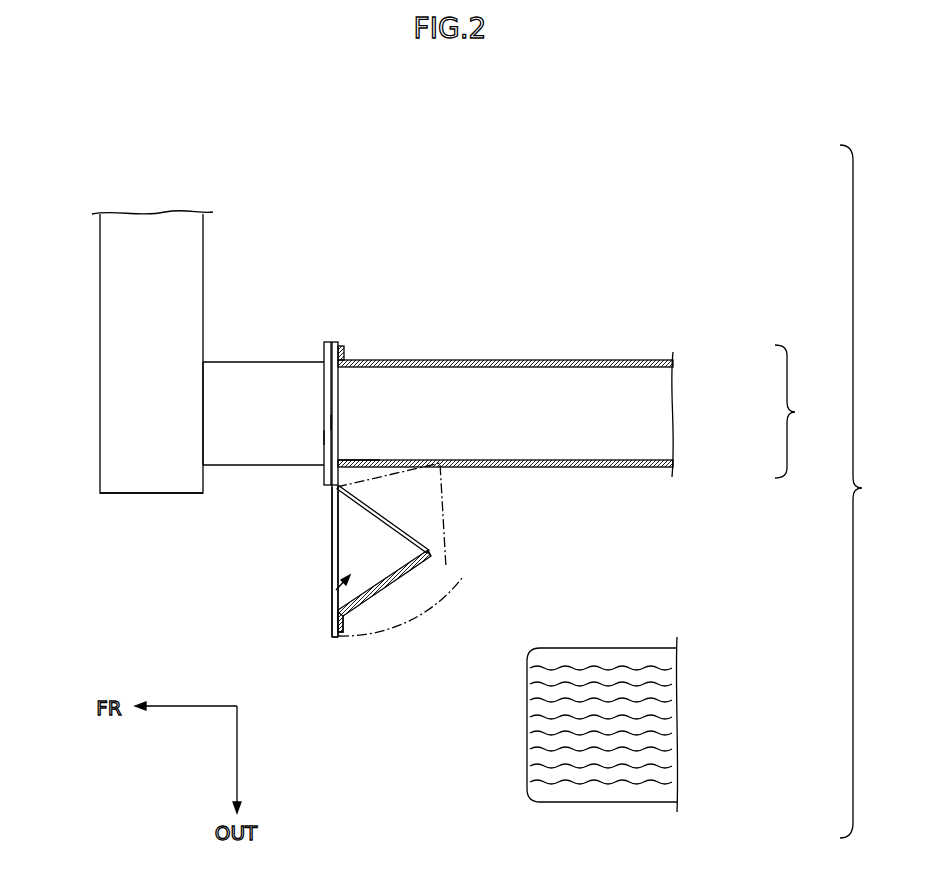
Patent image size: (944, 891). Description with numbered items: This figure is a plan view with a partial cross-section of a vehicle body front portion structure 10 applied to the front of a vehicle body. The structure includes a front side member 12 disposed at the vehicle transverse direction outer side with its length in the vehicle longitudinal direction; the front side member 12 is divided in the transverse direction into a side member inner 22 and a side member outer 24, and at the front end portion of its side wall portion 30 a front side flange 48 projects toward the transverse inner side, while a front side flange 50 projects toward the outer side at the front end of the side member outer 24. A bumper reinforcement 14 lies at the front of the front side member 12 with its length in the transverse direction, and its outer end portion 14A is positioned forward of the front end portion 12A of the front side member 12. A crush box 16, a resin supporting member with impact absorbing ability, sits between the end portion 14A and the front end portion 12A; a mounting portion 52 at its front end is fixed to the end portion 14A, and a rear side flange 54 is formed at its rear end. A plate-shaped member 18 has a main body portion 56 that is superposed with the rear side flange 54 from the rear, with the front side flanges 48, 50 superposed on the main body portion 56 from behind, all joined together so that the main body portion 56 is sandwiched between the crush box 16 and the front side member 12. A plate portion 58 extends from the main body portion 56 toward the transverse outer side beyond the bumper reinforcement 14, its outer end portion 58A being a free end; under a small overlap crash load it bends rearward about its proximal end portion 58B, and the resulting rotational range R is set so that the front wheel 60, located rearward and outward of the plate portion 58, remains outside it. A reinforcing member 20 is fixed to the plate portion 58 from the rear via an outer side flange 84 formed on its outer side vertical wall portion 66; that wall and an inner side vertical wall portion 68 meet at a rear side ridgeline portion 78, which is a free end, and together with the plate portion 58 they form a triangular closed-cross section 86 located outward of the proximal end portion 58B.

The vehicle body front portion structure 10 is at (436, 184).
The front side member 12 is at (579, 391).
The front end portion of the front side member 12A is at (325, 385).
The bumper reinforcement 14 is at (98, 301).
The end portion of the bumper reinforcement 14A is at (150, 494).
The crush box 16 is at (262, 360).
The plate-shaped member 18 is at (342, 436).
The reinforcing member 20 is at (391, 589).
The side member inner 22 is at (648, 362).
The side member outer 24 is at (648, 466).
The side wall portion 30 is at (546, 391).
The front side flange 48 is at (341, 352).
The front side flange 50 is at (340, 471).
The mounting portion 52 is at (203, 393).
The rear side flange 54 is at (322, 437).
The main body portion 56 is at (333, 423).
The plate portion 58 is at (331, 562).
The end portion of the plate portion 58A is at (333, 637).
The proximal end portion 58B is at (328, 488).
The front wheel 60 is at (637, 648).
The outer side vertical wall portion 66 is at (375, 606).
The inner side vertical wall portion 68 is at (392, 526).
The rear side ridgeline portion 78 is at (428, 552).
The outer side flange 84 is at (345, 630).
The closed-cross section 86 is at (336, 590).
The rotational range R is at (452, 598).